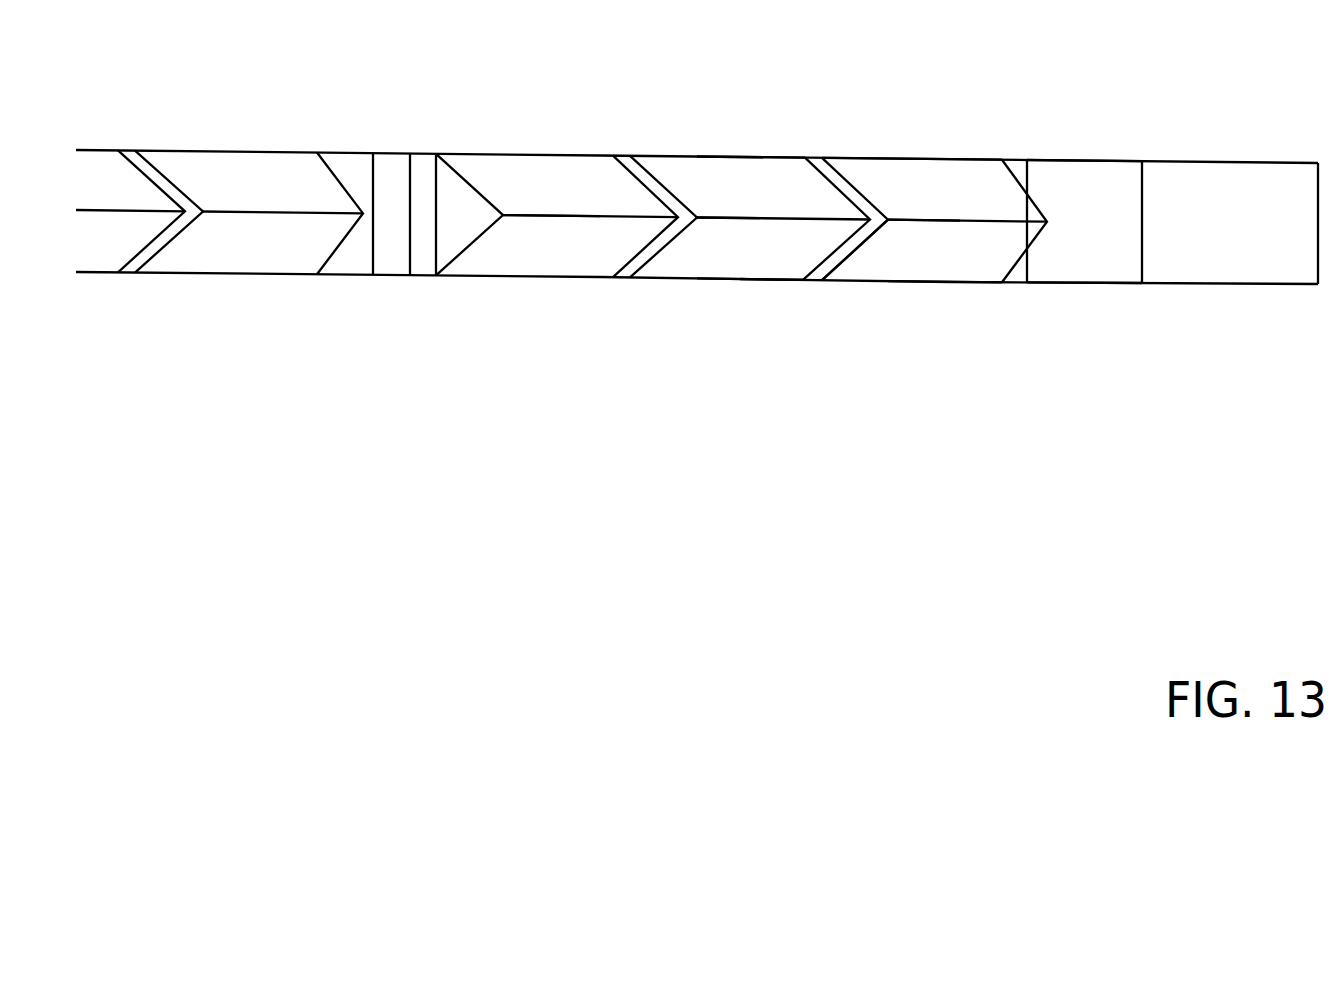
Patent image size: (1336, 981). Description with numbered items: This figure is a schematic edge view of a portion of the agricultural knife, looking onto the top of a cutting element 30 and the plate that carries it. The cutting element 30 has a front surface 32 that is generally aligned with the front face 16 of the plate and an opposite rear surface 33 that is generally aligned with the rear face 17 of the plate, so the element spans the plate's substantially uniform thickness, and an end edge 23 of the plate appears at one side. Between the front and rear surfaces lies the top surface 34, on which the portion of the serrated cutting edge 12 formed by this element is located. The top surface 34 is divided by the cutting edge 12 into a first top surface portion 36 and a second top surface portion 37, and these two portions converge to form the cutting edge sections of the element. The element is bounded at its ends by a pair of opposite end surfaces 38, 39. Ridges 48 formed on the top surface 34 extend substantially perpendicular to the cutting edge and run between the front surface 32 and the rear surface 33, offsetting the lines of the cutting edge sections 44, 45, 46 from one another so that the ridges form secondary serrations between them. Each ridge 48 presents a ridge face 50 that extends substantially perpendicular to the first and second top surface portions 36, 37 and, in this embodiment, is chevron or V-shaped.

The serrated cutting edge 12 is at (533, 190).
The front face 16 is at (1072, 161).
The rear face 17 is at (1075, 283).
The end edge 23 is at (1195, 248).
The cutting element 30 is at (777, 306).
The front surface 32 is at (897, 160).
The rear surface 33 is at (978, 283).
The top surface 34 is at (949, 190).
The first top surface portion 36 is at (757, 185).
The second top surface portion 37 is at (752, 250).
The end surface 38 is at (458, 222).
The end surface 39 is at (1045, 160).
The cutting edge section 44 is at (912, 222).
The cutting edge section 45 is at (733, 217).
The cutting edge section 46 is at (548, 219).
The ridge 48 is at (838, 188).
The ridge face 50 is at (833, 254).